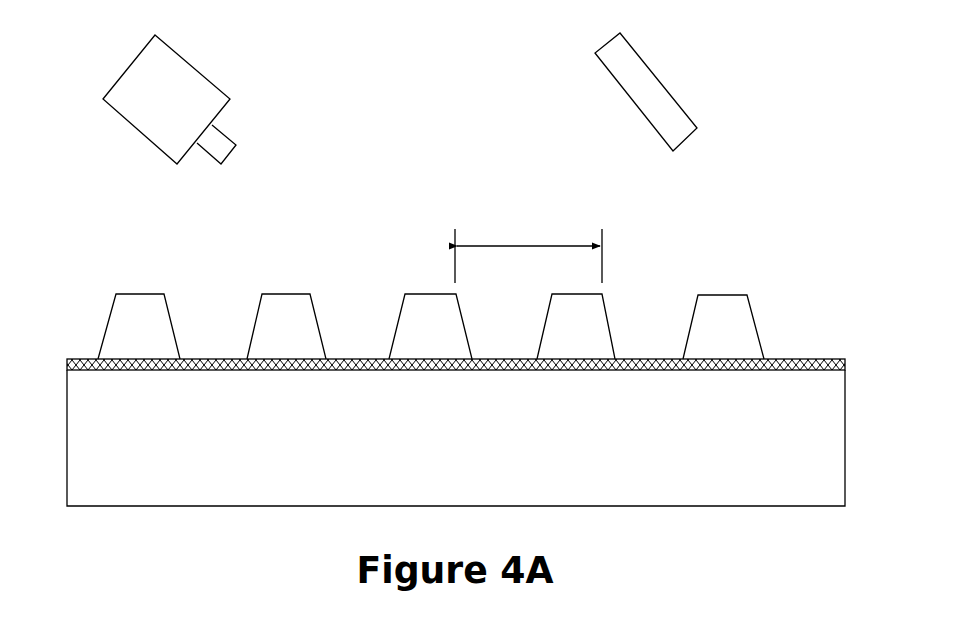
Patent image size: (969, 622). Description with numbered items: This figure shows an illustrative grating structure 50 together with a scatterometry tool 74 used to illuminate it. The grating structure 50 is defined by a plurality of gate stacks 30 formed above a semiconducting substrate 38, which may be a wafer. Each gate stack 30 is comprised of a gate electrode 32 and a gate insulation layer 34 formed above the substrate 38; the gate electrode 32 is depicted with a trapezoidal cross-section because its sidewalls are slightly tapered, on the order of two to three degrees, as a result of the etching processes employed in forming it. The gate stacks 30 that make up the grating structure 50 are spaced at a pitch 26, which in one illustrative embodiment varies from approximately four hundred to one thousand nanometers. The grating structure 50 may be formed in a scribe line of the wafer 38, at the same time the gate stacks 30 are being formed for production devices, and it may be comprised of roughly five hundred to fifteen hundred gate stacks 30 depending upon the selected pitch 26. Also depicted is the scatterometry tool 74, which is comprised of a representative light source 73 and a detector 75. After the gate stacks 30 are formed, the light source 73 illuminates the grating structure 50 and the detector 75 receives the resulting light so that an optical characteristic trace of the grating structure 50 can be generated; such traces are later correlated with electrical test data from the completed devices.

The pitch 26 is at (522, 246).
The gate stack 30 is at (132, 280).
The gate electrode 32 is at (117, 335).
The gate insulation layer 34 is at (67, 363).
The semiconducting substrate 38 is at (157, 490).
The grating structure 50 is at (683, 210).
The light source 73 is at (187, 85).
The scatterometry tool 74 is at (707, 63).
The detector 75 is at (640, 82).